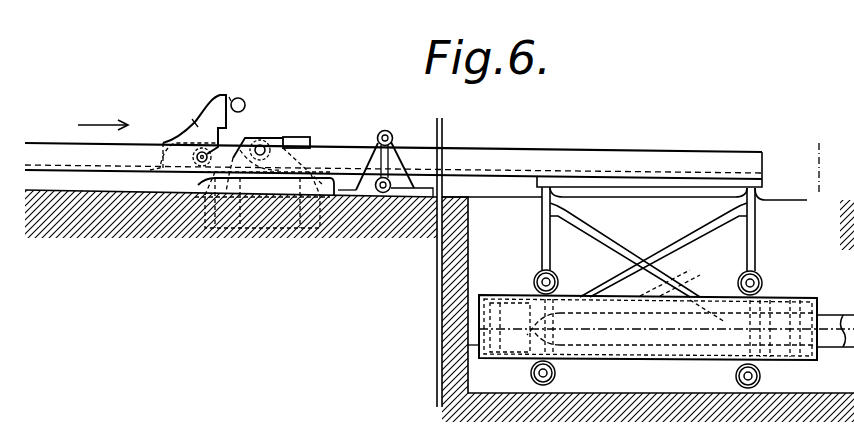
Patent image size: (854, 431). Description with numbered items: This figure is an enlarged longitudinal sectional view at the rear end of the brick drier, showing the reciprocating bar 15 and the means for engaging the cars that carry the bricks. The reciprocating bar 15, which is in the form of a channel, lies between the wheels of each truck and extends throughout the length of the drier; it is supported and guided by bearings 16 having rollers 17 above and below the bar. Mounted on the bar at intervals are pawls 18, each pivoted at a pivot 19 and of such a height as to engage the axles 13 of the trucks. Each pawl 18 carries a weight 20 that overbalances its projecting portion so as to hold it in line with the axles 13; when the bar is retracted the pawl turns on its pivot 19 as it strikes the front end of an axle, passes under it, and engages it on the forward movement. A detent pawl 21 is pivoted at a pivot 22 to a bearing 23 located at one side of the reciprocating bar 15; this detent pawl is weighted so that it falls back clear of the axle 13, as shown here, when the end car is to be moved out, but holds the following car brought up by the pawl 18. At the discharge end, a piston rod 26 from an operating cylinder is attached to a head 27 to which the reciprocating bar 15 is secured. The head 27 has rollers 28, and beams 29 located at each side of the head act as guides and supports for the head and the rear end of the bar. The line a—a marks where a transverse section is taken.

The axle 13 is at (245, 102).
The reciprocating bar 15 is at (481, 160).
The bearing 16 is at (408, 158).
The roller 17 is at (378, 136).
The pawl 18 is at (194, 124).
The pivot 19 is at (208, 152).
The weight 20 is at (172, 143).
The detent pawl 21 is at (287, 138).
The pivot 22 is at (260, 145).
The bearing 23 is at (210, 183).
The piston rod 26 is at (832, 344).
The head 27 is at (674, 242).
The roller 28 is at (537, 273).
The beam 29 is at (805, 302).
The section line a— a is at (813, 154).